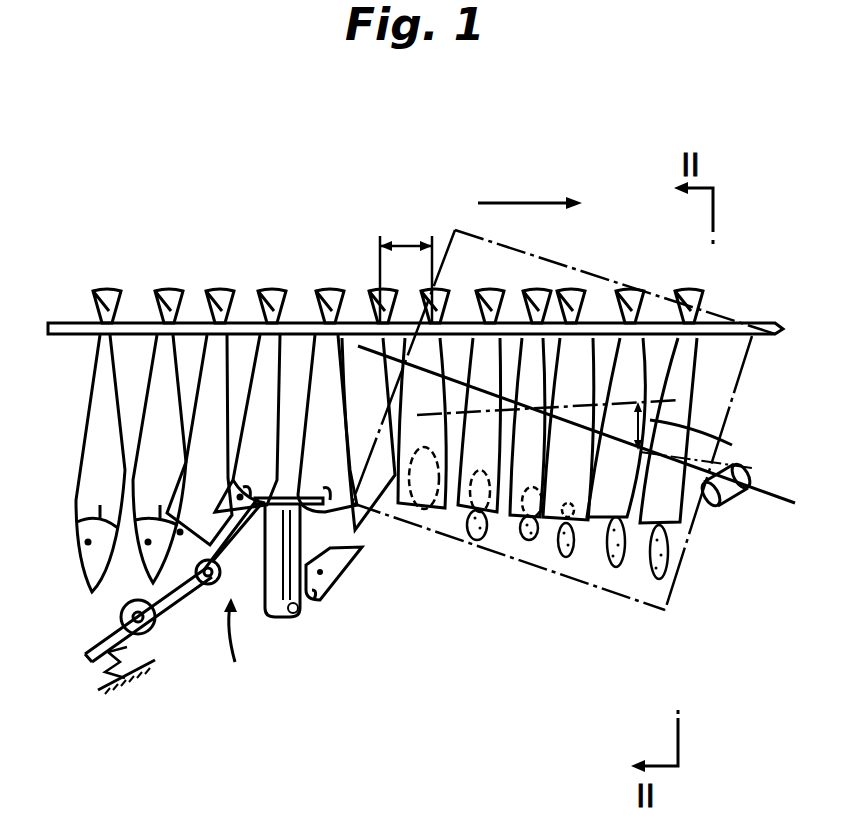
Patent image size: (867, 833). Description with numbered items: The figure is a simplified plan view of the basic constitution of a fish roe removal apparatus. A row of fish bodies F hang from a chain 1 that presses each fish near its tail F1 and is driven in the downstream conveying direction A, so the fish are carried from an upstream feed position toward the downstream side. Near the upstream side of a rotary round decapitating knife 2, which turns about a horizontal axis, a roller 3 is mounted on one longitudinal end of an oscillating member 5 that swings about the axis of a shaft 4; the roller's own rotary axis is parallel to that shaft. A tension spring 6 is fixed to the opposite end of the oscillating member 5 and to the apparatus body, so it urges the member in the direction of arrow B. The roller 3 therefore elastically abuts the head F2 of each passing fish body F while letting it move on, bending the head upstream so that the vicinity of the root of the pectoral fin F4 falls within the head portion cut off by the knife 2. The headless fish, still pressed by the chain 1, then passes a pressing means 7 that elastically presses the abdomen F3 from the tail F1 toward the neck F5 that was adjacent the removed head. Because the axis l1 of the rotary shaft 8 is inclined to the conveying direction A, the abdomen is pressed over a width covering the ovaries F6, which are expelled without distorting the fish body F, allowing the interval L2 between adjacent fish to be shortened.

The chain 1 is at (778, 329).
The rotary round decapitating knife 2 is at (233, 543).
The roller 3 is at (208, 585).
The shaft 4 is at (148, 632).
The oscillating member 5 is at (110, 640).
The tension spring 6 is at (104, 684).
The pressing means 7 is at (575, 290).
The rotary shaft 8 is at (712, 500).
The fish body F is at (100, 438).
The tail F1 is at (108, 298).
The head F2 is at (95, 562).
The abdomen F3 is at (105, 474).
The pectoral fin F4 is at (100, 512).
The neck F5 is at (475, 506).
The ovaries F6 is at (650, 580).
The interval between adjacent fish bodies L2 is at (406, 240).
The downstream conveying direction A is at (532, 201).
The direction of oscillation B is at (236, 641).
The axis of rotary shaft l1 is at (760, 490).